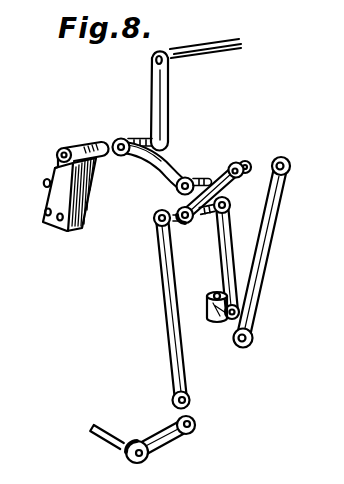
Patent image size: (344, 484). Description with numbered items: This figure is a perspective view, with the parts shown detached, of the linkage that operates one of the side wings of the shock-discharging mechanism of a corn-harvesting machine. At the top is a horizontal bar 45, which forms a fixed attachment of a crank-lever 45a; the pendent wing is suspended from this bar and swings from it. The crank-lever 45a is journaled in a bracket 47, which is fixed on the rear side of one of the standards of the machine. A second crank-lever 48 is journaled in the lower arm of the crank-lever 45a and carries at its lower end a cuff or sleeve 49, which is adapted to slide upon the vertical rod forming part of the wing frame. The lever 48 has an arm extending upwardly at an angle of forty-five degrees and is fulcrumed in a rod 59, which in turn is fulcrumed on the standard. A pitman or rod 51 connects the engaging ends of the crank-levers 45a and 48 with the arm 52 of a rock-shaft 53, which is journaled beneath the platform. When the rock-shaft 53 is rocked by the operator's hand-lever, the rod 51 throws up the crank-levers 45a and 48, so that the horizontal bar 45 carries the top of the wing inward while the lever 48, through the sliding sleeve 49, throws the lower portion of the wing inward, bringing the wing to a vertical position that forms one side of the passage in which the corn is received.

The horizontal bar 45 is at (205, 55).
The crank-lever 45a is at (153, 70).
The bracket 47 is at (82, 203).
The second crank-lever 48 is at (232, 170).
The cuff or sleeve 49 is at (215, 292).
The pitman or rod 51 is at (170, 308).
The arm 52 is at (170, 436).
The rock-shaft 53 is at (104, 447).
The rod 59 is at (268, 263).